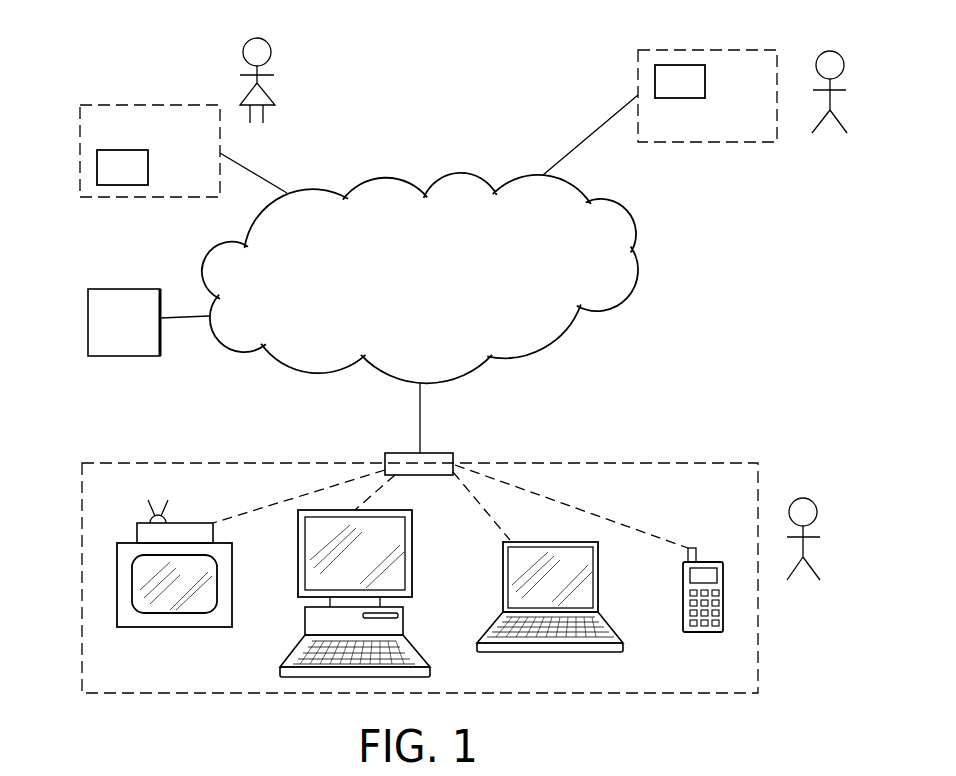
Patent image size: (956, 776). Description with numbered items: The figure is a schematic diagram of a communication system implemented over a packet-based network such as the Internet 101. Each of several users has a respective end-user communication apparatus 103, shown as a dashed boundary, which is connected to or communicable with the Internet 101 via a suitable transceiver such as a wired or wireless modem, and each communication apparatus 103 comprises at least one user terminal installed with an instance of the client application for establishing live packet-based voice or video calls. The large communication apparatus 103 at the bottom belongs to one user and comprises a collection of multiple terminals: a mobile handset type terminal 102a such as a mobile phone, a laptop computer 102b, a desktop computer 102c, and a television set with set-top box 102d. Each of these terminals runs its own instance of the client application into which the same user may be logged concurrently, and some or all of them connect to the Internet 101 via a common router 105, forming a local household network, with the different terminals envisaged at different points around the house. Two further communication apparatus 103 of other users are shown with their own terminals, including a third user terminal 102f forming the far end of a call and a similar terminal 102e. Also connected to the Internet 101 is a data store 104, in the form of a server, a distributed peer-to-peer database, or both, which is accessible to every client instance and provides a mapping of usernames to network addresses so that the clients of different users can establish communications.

The Internet 101 is at (639, 270).
The mobile handset type terminal 102a is at (703, 632).
The laptop computer 102b is at (503, 568).
The desktop computer 102c is at (298, 531).
The television set with set-top box 102d is at (172, 627).
The client device 102e is at (679, 65).
The third user terminal 102f is at (125, 186).
The end-user communication apparatus 103 is at (130, 105).
The data store 104 is at (120, 356).
The common router 105 is at (455, 455).